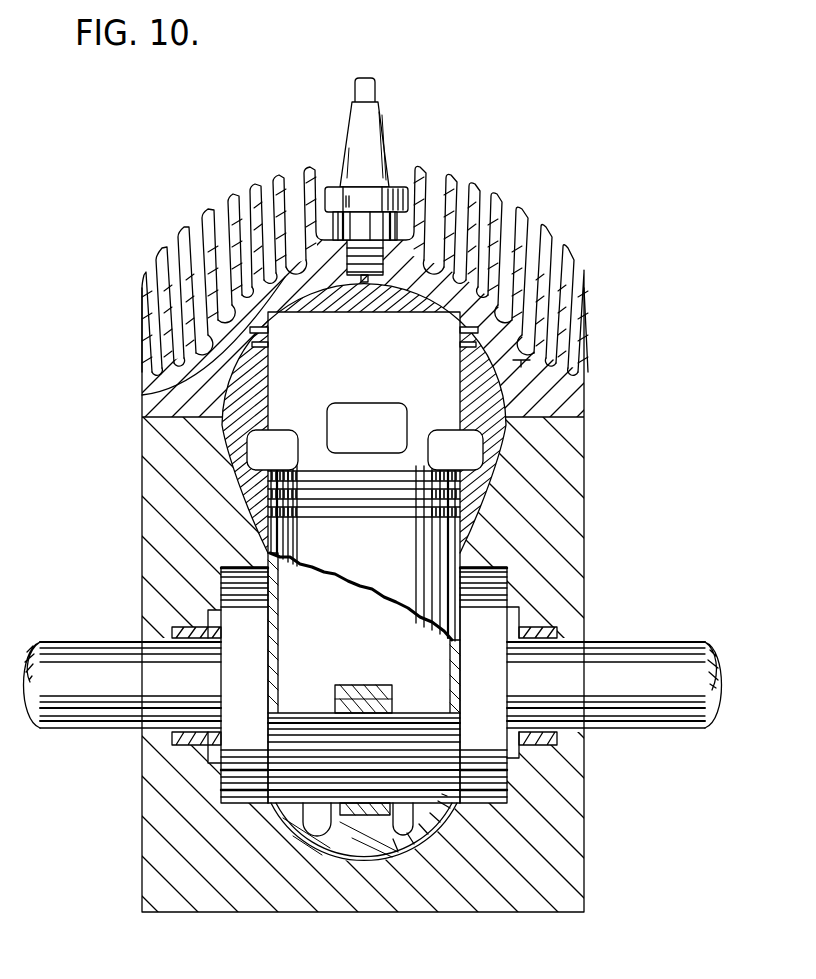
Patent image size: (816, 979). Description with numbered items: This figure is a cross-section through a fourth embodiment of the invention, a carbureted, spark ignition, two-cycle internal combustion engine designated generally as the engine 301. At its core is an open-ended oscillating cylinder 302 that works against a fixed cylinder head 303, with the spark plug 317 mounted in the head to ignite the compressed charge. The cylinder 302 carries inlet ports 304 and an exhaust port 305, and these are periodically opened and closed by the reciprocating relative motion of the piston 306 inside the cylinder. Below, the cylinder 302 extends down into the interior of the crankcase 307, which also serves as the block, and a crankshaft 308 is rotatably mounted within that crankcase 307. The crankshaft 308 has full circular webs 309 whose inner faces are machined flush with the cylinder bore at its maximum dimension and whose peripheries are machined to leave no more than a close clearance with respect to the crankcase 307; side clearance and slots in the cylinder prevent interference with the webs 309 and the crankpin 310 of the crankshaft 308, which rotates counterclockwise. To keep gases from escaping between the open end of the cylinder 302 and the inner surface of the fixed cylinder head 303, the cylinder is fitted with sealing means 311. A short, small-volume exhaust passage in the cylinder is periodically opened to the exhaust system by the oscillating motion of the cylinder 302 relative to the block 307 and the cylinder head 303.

The engine 301 is at (632, 256).
The oscillating cylinder 302 is at (508, 400).
The fixed cylinder head 303 is at (510, 363).
The inlet ports 304 is at (447, 453).
The exhaust port 305 is at (380, 433).
The piston 306 is at (397, 543).
The crankcase 307 is at (590, 837).
The crankshaft 308 is at (115, 728).
The webs 309 is at (240, 723).
The crankpin 310 is at (325, 823).
The sealing means 311 is at (142, 395).
The spark plug 317 is at (383, 123).